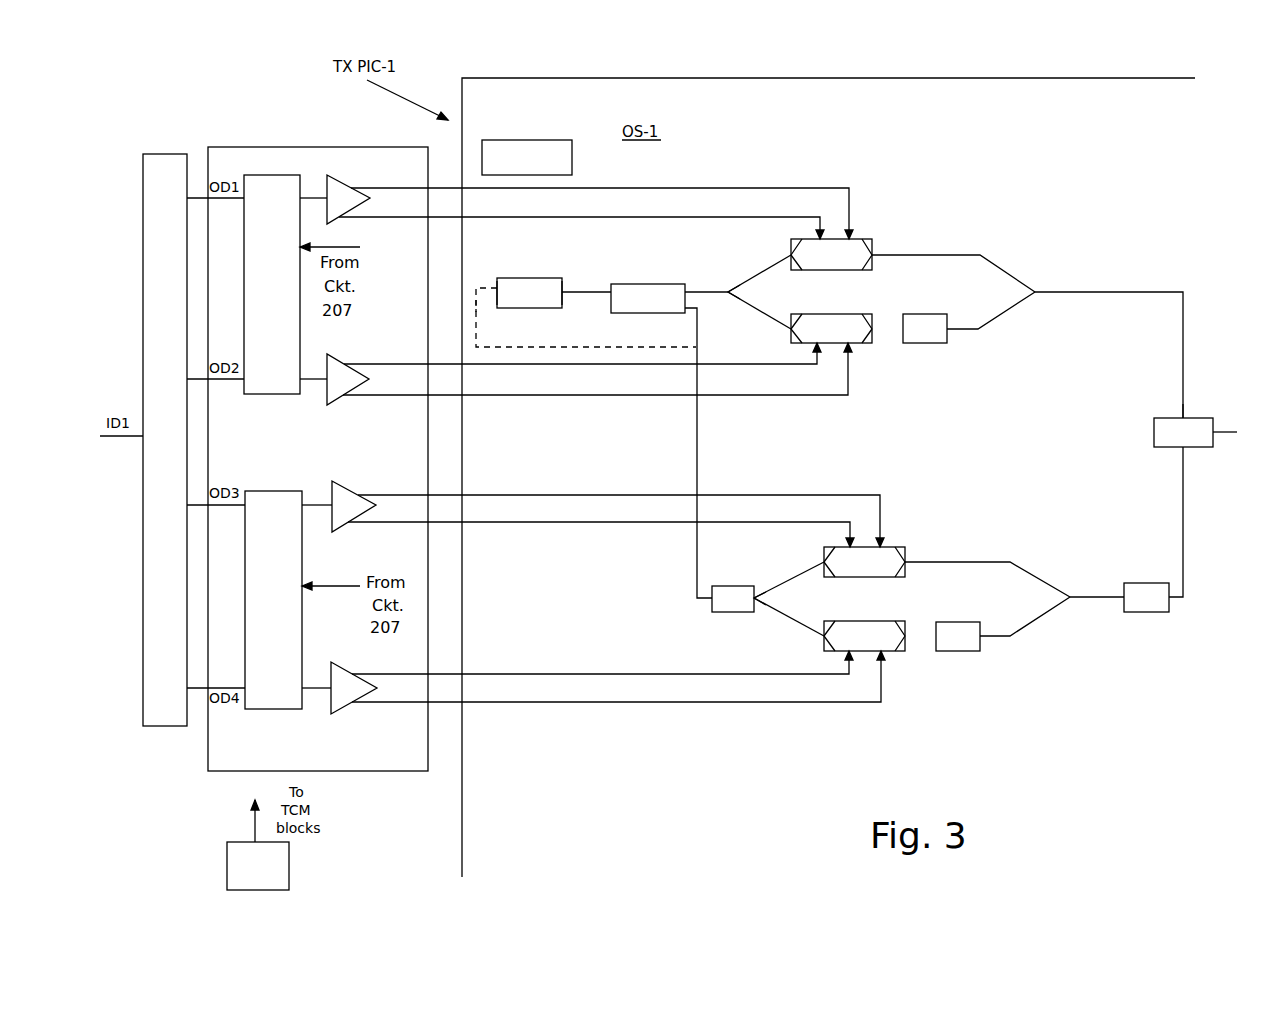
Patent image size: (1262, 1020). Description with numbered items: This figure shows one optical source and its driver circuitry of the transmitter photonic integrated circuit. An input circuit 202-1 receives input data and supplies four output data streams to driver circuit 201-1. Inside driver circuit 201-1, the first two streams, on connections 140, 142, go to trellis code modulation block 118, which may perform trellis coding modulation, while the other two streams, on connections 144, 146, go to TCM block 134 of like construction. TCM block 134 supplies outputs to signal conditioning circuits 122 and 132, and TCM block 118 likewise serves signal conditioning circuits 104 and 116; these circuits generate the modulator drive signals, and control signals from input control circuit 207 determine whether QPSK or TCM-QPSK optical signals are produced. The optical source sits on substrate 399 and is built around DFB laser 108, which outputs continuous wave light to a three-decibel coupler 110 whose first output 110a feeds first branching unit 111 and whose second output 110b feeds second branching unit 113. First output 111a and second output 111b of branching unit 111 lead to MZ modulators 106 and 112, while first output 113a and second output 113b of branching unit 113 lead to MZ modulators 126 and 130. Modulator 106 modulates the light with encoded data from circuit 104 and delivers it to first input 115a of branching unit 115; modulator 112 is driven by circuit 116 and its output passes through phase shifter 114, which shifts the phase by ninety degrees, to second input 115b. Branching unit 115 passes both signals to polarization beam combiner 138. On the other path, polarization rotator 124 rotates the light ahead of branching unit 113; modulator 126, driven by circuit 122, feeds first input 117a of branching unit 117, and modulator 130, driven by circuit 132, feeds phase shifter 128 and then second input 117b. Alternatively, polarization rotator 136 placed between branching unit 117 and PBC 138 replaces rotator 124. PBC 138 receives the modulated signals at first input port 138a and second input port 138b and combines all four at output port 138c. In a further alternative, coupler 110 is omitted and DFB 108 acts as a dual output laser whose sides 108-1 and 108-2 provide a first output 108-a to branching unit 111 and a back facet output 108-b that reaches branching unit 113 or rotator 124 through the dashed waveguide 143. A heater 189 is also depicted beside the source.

The input circuit 202-1 is at (175, 153).
The driver circuit 201-1 is at (352, 147).
The trellis code modulation block 118 is at (292, 395).
The TCM block 134 is at (288, 709).
The signal conditioning circuit 104 is at (337, 178).
The signal conditioning circuit 116 is at (338, 398).
The signal conditioning circuit 122 is at (343, 525).
The signal conditioning circuit 132 is at (343, 708).
The output data line OD1 140 is at (217, 203).
The output data line OD2 142 is at (227, 382).
The output data line OD3 144 is at (220, 507).
The output data line OD4 146 is at (237, 686).
The input control circuit 207 is at (289, 853).
The substrate 399 is at (667, 78).
The heater 189 is at (508, 140).
The waveguide 143 is at (476, 305).
The DFB laser 108 is at (533, 278).
The side of DFB 108-2 is at (495, 281).
The side of DFB 108-1 is at (563, 302).
The first output of DFB 108-a is at (587, 283).
The back facet output of DFB 108-b is at (586, 317).
The coupler 110 is at (630, 284).
The first output of coupler 110a is at (695, 291).
The second output of coupler 110b is at (698, 322).
The first branching unit 111 is at (726, 289).
The first output of branching unit 111a is at (758, 274).
The second output of branching unit 111b is at (764, 313).
The MZ modulator 106 is at (867, 239).
The MZ modulator 112 is at (845, 314).
The phase shifter 114 is at (947, 343).
The first input of branching unit 115a is at (983, 257).
The second input of branching unit 115b is at (1010, 308).
The branching unit 115 is at (1040, 290).
The polarization beam combiner 138 is at (1189, 418).
The first input port of PBC 138a is at (1181, 416).
The second input port of PBC 138b is at (1187, 447).
The output port of PBC 138c is at (1218, 437).
The polarization rotator 136 is at (1162, 612).
The branching unit 117 is at (1072, 600).
The first input of branching unit 117a is at (1022, 569).
The second input of branching unit 117b is at (1032, 622).
The phase shifter 128 is at (977, 651).
The MZ modulator 126 is at (899, 547).
The MZ modulator 130 is at (905, 650).
The polarization rotator 124 is at (718, 612).
The second branching unit 113 is at (762, 595).
The first output of branching unit 113a is at (797, 577).
The second output of branching unit 113b is at (786, 617).